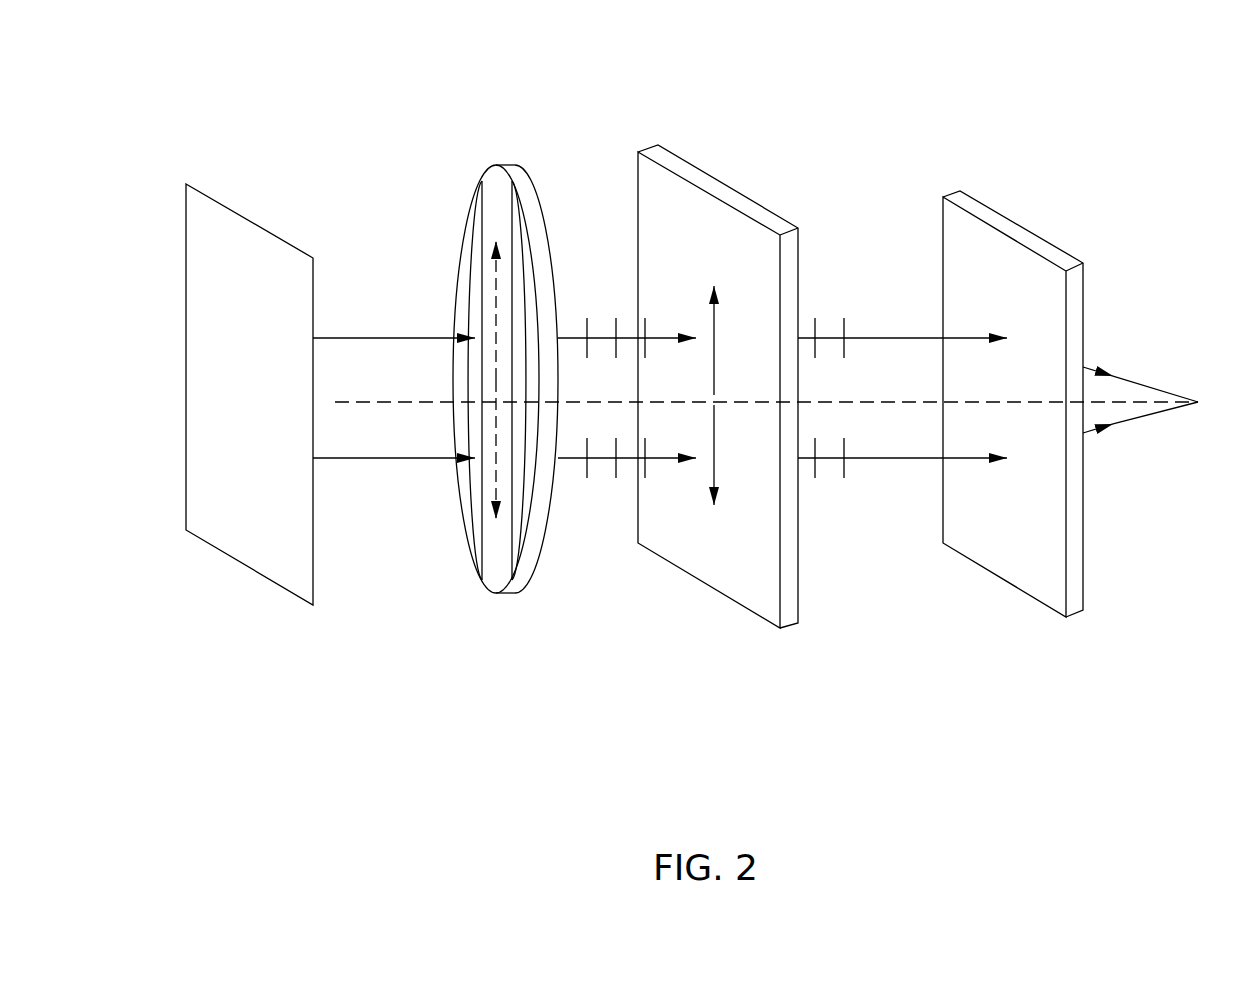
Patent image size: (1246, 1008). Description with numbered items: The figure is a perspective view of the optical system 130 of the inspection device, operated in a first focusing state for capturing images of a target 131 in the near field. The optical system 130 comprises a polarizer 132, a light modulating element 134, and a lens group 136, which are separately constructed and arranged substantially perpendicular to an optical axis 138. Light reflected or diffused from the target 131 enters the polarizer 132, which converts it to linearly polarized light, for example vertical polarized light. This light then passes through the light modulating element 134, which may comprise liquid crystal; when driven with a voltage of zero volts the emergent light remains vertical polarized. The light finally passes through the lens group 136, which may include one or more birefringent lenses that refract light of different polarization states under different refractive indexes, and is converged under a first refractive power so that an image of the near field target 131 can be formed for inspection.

The optical system 130 is at (1088, 143).
The target 131 is at (254, 260).
The polarizer 132 is at (520, 577).
The light modulating element 134 is at (788, 593).
The lens group 136 is at (1073, 595).
The optical axis 138 is at (397, 402).